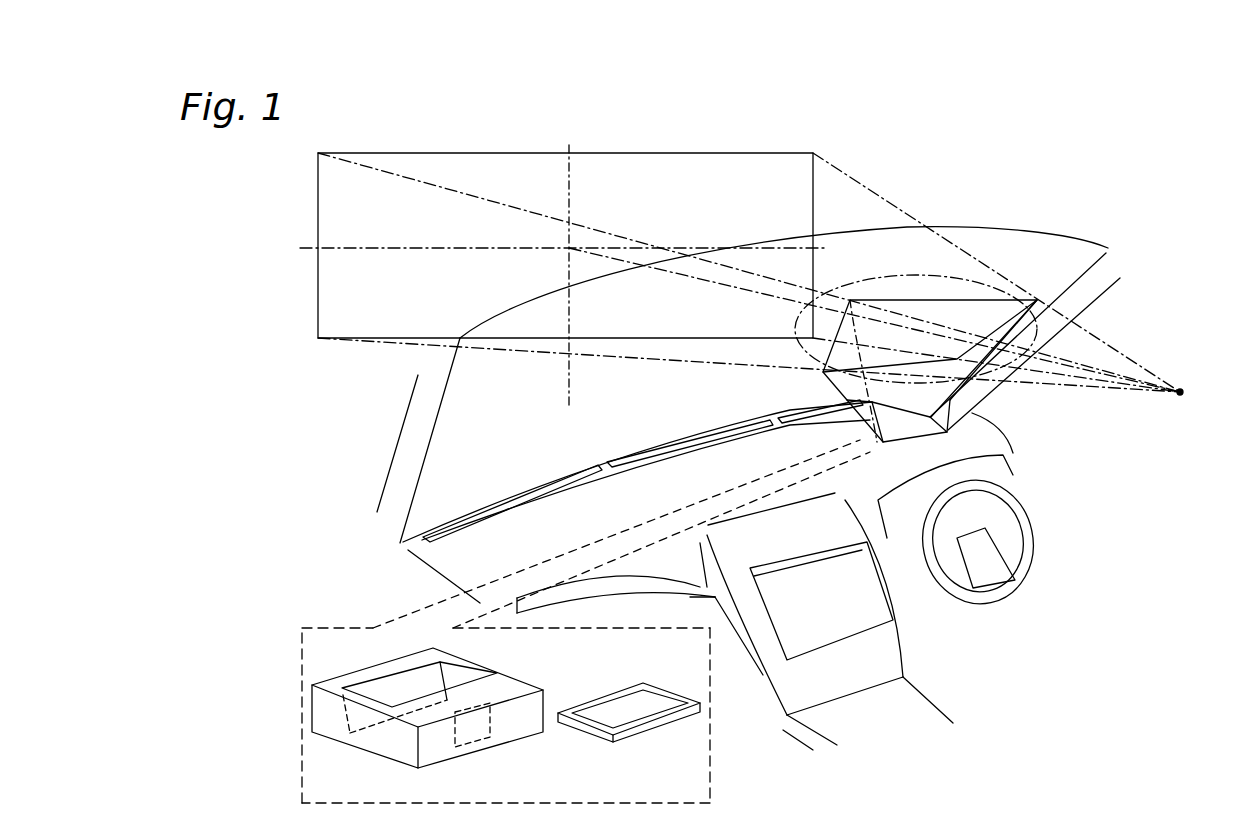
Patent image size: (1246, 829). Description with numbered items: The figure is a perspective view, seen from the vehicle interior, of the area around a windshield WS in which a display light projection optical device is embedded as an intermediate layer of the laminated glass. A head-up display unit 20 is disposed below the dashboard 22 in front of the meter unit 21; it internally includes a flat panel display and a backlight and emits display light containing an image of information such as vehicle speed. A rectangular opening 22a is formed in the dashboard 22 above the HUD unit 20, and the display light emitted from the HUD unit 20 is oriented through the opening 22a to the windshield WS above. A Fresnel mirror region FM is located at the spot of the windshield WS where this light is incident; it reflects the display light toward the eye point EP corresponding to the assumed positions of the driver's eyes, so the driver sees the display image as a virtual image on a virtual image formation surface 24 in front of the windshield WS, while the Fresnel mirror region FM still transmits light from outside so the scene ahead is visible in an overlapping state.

The head-up display (HUD) unit 20 is at (523, 675).
The meter unit 21 is at (903, 515).
The dashboard 22 is at (693, 470).
The opening 22a is at (945, 443).
The virtual image formation surface 24 is at (625, 153).
The windshield WS is at (947, 224).
The Fresnel mirror region FM is at (959, 272).
The eye point EP is at (1195, 380).